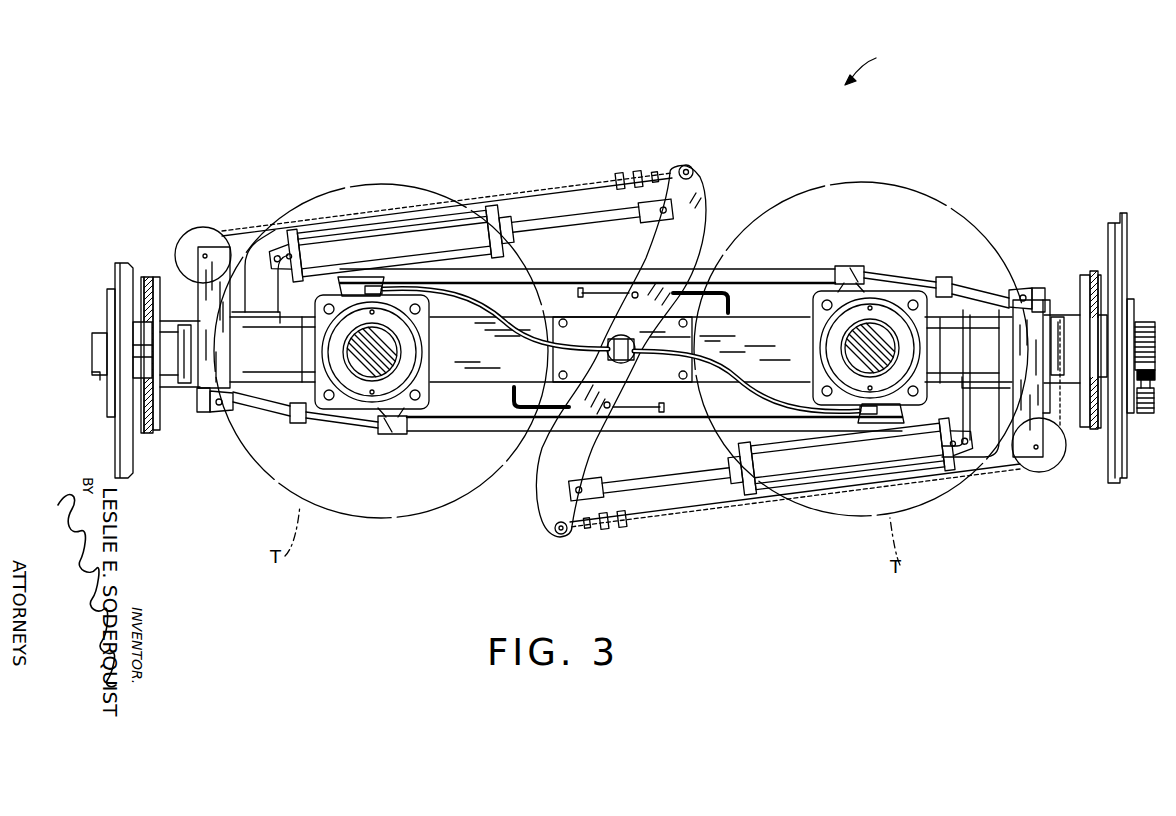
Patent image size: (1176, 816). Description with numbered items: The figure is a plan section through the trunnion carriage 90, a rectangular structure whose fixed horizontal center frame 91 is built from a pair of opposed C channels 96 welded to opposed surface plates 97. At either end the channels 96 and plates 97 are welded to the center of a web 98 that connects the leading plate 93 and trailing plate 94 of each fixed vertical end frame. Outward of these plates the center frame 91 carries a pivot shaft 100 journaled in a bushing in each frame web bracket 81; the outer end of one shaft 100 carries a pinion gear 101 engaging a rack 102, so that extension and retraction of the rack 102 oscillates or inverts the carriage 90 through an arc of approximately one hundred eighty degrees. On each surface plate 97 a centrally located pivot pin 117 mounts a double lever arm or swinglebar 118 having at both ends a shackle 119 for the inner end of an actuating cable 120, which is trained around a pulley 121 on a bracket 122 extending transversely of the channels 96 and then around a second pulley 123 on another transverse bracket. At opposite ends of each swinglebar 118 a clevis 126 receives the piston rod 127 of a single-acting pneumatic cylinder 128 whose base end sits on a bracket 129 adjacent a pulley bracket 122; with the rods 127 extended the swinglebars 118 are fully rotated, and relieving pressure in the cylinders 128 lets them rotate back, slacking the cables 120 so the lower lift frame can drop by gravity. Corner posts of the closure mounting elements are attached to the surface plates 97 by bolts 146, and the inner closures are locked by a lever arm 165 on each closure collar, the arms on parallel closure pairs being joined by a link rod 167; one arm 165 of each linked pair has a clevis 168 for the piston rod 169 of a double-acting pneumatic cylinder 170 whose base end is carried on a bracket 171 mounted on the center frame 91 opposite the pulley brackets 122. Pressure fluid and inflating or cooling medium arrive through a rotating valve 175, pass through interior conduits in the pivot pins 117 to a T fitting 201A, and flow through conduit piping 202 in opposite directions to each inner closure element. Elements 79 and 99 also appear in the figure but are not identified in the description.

The side rail 79 is at (122, 281).
The frame web bracket 81 is at (108, 408).
The trunnion carriage 90 is at (874, 64).
The center frame 91 is at (621, 349).
The leading plate 93 is at (147, 434).
The trailing plate 94 is at (149, 277).
The C channels 96 is at (302, 332).
The surface plates 97 is at (158, 292).
The web 98 is at (147, 341).
The bearing block 99 is at (136, 327).
The pivot shaft 100 is at (143, 350).
The pinion gear 101 is at (1147, 322).
The rack 102 is at (1140, 413).
The pivot pin 117 is at (614, 337).
The swinglebar 118 is at (700, 212).
The shackle 119 is at (690, 165).
The actuating cable 120 is at (496, 196).
The pulley 121 is at (203, 232).
The pulley bracket 122 is at (207, 350).
The second pulley 123 is at (183, 390).
The clevis 126 is at (645, 226).
The piston rod 127 is at (593, 228).
The single-acting pneumatic cylinder 128 is at (405, 230).
The cylinder bracket 129 is at (268, 240).
The bolts 146 is at (428, 402).
The lever arm 165 is at (398, 437).
The link rod 167 is at (500, 434).
The clevis 168 is at (392, 437).
The piston rod 169 is at (350, 427).
The double-acting pneumatic cylinder 170 is at (251, 414).
The bracket 171 is at (212, 418).
The rotating valve 175 is at (97, 377).
The T fitting 201A is at (648, 387).
The conduit piping 202 is at (532, 347).